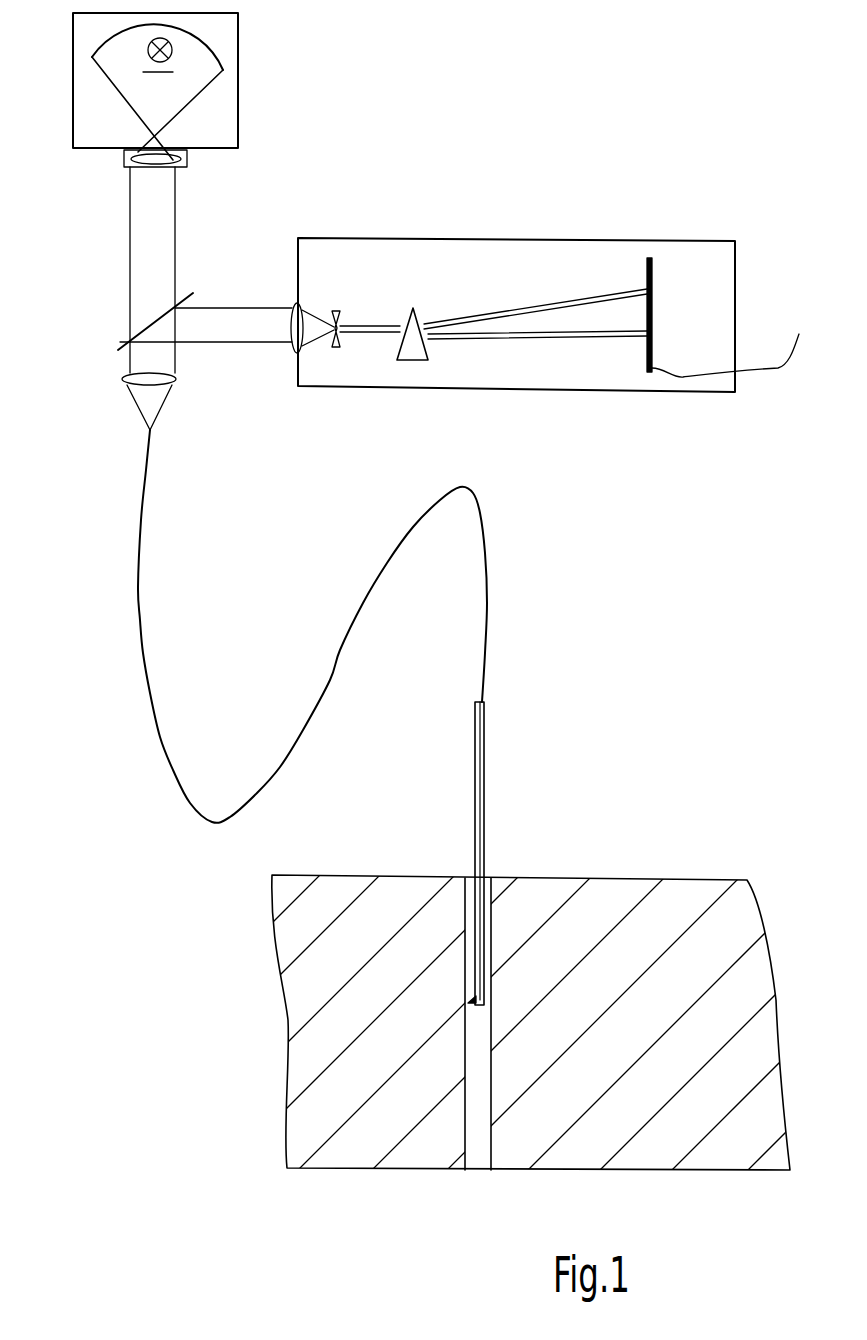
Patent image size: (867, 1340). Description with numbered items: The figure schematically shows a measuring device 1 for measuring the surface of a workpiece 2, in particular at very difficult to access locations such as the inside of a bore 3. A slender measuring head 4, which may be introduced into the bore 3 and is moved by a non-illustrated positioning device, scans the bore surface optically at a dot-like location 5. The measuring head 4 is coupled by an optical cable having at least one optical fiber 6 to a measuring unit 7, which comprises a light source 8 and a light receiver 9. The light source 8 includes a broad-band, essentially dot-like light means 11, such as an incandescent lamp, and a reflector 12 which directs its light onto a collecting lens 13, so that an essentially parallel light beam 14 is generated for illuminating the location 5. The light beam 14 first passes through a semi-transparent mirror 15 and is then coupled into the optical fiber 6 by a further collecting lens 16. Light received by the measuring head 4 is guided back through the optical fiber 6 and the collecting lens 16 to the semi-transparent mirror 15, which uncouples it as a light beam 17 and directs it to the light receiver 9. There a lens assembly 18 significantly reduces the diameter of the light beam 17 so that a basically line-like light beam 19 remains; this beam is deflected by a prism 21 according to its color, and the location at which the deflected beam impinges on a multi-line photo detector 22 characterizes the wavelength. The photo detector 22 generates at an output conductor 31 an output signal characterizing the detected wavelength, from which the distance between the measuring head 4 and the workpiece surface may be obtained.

The measuring device 1 is at (514, 126).
The workpiece 2 is at (553, 887).
The bore 3 is at (478, 1170).
The measuring head 4 is at (487, 797).
The location 5 is at (468, 1000).
The optical fiber 6 is at (474, 503).
The measuring unit 7 is at (260, 456).
The light source 8 is at (240, 98).
The light receiver 9 is at (539, 240).
The light means 11 is at (147, 48).
The reflector 12 is at (207, 45).
The collecting lens 13 is at (206, 168).
The light beam 14 is at (162, 242).
The semi-transparent mirror 15 is at (185, 291).
The further collecting lens 16 is at (122, 381).
The light beam 17 is at (237, 338).
The lens assembly 18 is at (322, 294).
The line-like light beam 19 is at (368, 326).
The prism 21 is at (405, 362).
The multi-line photo detector 22 is at (652, 268).
The output conductor 31 is at (735, 340).